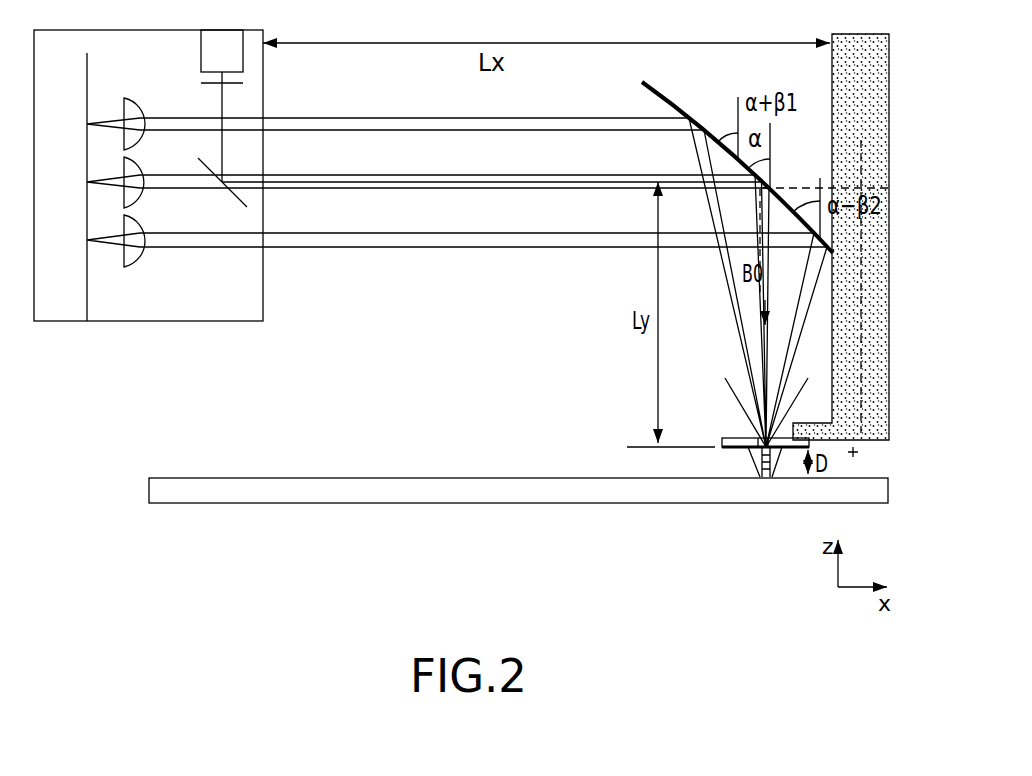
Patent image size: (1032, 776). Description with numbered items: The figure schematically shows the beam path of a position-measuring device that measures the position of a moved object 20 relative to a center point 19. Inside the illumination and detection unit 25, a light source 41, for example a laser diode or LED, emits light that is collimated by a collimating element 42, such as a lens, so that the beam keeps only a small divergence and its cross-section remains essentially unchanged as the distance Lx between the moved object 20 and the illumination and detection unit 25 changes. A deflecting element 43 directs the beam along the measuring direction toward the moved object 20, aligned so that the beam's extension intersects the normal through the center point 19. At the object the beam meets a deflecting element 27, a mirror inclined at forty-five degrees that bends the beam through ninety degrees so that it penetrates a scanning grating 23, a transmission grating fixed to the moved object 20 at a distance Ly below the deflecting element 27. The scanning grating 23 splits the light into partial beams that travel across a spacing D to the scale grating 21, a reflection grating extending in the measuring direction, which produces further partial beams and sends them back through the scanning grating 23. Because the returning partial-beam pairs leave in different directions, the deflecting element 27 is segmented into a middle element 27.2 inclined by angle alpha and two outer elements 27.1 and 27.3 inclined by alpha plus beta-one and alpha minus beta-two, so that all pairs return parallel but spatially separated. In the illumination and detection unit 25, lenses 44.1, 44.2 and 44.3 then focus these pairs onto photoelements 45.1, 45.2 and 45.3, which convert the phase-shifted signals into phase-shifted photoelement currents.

The center point 19 is at (865, 458).
The moved object 20 is at (861, 140).
The scale grating 21 is at (547, 488).
The scanning grating 23 is at (735, 442).
The illumination and detection unit 25 is at (181, 322).
The deflecting element 27 is at (660, 95).
The outer element 27.1 is at (715, 125).
The middle element 27.2 is at (782, 210).
The outer element 27.3 is at (797, 198).
The light source 41 is at (233, 63).
The collimating element 42 is at (204, 83).
The deflecting element 43 is at (213, 162).
The lens 44.1 is at (153, 248).
The lens 44.2 is at (153, 190).
The lens 44.3 is at (153, 131).
The photoelement 45.1 is at (434, 240).
The photoelement 45.2 is at (405, 182).
The photoelement 45.3 is at (373, 124).